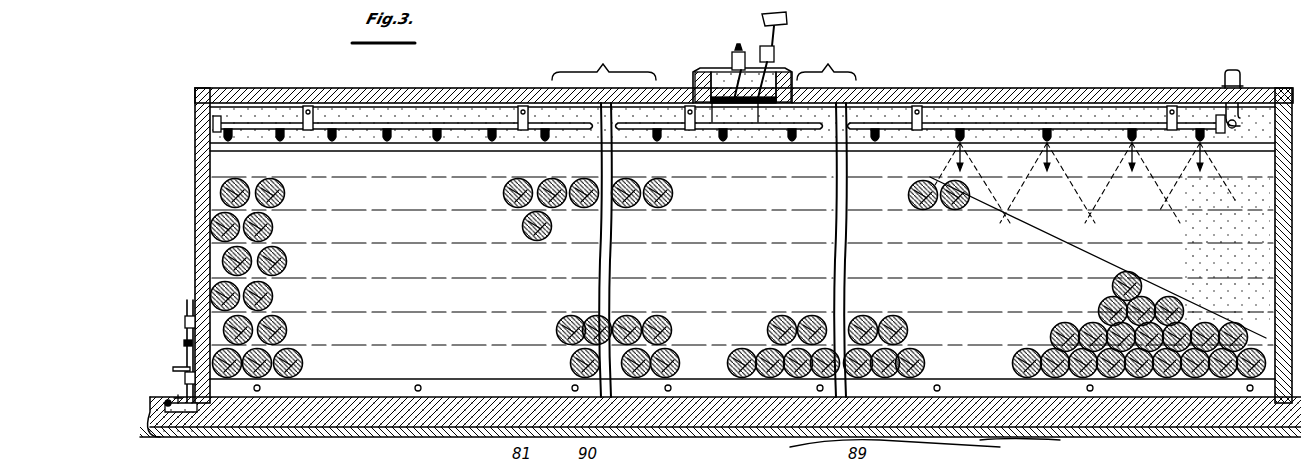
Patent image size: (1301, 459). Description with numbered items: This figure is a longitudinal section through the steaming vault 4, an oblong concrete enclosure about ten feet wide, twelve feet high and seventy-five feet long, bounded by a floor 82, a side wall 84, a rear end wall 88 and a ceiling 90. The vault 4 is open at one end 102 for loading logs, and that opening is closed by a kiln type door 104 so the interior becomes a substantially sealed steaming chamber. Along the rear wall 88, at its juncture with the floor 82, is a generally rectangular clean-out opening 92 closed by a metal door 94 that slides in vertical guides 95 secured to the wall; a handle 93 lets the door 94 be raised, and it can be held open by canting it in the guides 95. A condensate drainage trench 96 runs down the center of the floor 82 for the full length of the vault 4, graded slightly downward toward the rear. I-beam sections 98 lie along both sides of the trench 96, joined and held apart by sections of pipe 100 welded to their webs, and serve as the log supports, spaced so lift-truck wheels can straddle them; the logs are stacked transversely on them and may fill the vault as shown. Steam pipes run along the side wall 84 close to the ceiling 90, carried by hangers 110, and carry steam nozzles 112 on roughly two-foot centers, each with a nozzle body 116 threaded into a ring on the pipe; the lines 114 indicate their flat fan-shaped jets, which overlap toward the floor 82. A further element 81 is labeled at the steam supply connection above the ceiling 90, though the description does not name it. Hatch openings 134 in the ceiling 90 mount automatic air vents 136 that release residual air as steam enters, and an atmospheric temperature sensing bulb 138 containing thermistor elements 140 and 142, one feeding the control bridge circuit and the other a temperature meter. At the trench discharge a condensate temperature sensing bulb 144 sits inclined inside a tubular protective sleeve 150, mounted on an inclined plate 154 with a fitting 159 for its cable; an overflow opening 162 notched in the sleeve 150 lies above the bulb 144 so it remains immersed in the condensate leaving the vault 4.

The steaming vault 4 is at (896, 86).
The water supply pipe 81 is at (1228, 70).
The floor 82 is at (492, 410).
The side wall 84 is at (1190, 241).
The end wall 88 is at (197, 200).
The ceiling 90 is at (523, 104).
The vault clean-out opening 92 is at (738, 278).
The handle 93 is at (176, 368).
The metal door 94 is at (184, 344).
The vertical guides 95 is at (186, 318).
The condensate drainage trench 96 is at (365, 400).
The I-beam sections 98 is at (925, 383).
The sections of pipe 100 is at (417, 384).
The open end 102 is at (410, 122).
The kiln type door 104 is at (1270, 234).
The hangers 110 is at (308, 131).
The steam nozzles 112 is at (281, 143).
The discharge jet lines 114 is at (1090, 195).
The nozzle body 116 is at (916, 131).
The hatch openings 134 is at (770, 66).
The automatic air vents 136 is at (760, 50).
The atmospheric temperature sensing bulb 138 is at (732, 66).
The thermistor element 140 is at (712, 124).
The thermistor element 142 is at (759, 124).
The condensate temperature sensing bulb 144 is at (210, 438).
The tubular protective sleeve 150 is at (183, 436).
The plate 154 is at (168, 440).
The fitting 159 is at (166, 403).
The overflow opening 162 is at (185, 402).